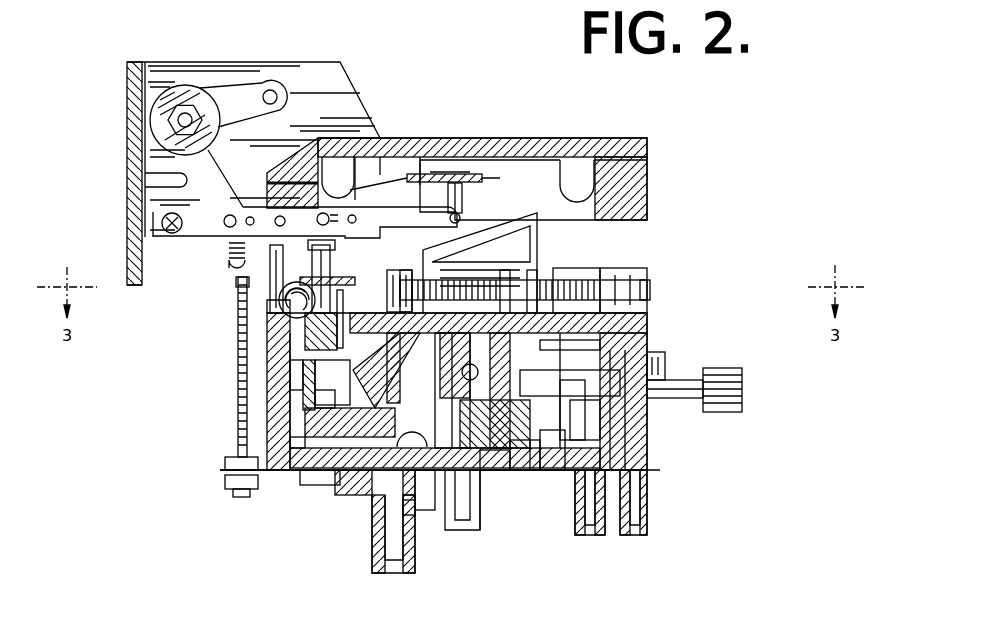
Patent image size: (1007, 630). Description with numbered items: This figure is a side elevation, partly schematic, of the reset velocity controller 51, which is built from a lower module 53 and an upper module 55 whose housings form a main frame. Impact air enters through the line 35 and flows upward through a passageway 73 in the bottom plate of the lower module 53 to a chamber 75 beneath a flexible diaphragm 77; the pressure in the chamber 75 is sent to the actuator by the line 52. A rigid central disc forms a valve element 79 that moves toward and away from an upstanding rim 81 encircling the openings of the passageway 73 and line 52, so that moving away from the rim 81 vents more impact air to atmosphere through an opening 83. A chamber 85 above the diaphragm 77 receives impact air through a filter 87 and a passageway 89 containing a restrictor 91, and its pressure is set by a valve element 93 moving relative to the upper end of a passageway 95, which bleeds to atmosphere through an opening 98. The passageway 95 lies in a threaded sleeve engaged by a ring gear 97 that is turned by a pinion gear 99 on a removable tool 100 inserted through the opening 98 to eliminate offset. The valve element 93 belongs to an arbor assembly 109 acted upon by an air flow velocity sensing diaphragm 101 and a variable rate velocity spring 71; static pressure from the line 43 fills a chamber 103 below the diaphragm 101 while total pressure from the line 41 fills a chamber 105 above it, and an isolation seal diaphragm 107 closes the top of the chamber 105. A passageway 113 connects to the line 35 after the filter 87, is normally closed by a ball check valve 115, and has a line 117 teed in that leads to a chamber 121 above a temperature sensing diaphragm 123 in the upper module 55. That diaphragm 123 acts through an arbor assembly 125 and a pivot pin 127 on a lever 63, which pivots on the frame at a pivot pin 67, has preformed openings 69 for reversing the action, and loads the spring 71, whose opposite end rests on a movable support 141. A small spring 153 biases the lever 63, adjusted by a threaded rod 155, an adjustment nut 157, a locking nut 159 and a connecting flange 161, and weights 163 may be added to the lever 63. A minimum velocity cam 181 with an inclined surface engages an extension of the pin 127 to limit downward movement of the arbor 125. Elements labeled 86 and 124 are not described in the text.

The line 35 is at (375, 562).
The line 41 is at (640, 537).
The line 43 is at (590, 537).
The controller 51 is at (767, 110).
The line 52 is at (495, 472).
The lower module 53 is at (650, 347).
The upper module 55 is at (648, 200).
The lever 63 is at (375, 216).
The pivot pin 67 is at (280, 215).
The preformed openings 69 is at (352, 214).
The variable rate velocity spring 71 is at (656, 285).
The passageway 73 is at (420, 502).
The chamber 75 is at (462, 472).
The flexible diaphragm 77 is at (545, 472).
The valve element 79 is at (310, 422).
The upstanding rim 81 is at (510, 472).
The opening 83 is at (540, 482).
The chamber 85 is at (600, 422).
The seal 86 is at (480, 368).
The filter 87 is at (332, 505).
The passageway 89 is at (365, 492).
The restrictor 91 is at (415, 512).
The valve element 93 is at (447, 396).
The passageway 95 is at (490, 467).
The ring gear 97 is at (600, 407).
The opening 98 is at (600, 397).
The pinion gear 99 is at (688, 378).
The removable tool 100 is at (744, 392).
The air flow velocity sensing diaphragm 101 is at (652, 372).
The chamber 103 is at (290, 377).
The chamber 105 is at (280, 337).
The isolation seal diaphragm 107 is at (382, 322).
The arbor assembly 109 is at (650, 332).
The passageway 113 is at (300, 402).
The ball check valve 115 is at (268, 313).
The line 117 is at (238, 283).
The chamber 121 is at (558, 180).
The temperature sensing diaphragm 123 is at (545, 137).
The bottom wall 124 is at (290, 452).
The arbor assembly 125 is at (465, 198).
The pivot pin 127 is at (452, 213).
The movable support 141 is at (650, 267).
The spring 153 is at (228, 248).
The threaded rod 155 is at (237, 307).
The adjustment nut 157 is at (250, 492).
The locking nut 159 is at (225, 461).
The connecting flange 161 is at (230, 477).
The weights 163 is at (185, 108).
The minimum velocity cam 181 is at (540, 232).